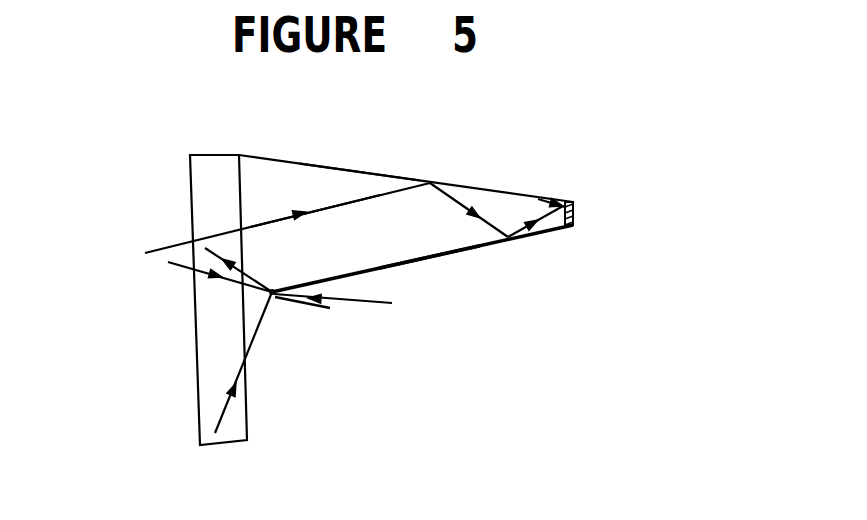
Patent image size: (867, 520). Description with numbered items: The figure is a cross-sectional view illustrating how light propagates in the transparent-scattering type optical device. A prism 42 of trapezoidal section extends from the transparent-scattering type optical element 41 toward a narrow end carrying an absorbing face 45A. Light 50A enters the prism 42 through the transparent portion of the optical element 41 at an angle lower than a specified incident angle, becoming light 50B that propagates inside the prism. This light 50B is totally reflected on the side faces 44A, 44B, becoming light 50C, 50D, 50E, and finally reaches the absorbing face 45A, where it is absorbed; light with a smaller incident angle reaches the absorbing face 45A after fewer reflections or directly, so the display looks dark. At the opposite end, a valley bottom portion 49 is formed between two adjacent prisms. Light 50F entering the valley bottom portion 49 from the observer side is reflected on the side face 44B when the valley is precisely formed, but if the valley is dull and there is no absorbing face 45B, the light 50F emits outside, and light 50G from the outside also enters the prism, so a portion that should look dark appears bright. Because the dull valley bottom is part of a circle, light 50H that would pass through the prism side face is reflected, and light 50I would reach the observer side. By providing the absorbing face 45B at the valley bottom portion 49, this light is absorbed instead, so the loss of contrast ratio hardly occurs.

The transparent-scattering type optical element 41 is at (206, 150).
The prism 42 is at (452, 174).
The side face 44A is at (378, 174).
The side face 44B is at (432, 258).
The absorbing face 45A is at (575, 212).
The absorbing face 45B is at (280, 305).
The valley bottom portion 49 is at (272, 293).
The light 50A is at (168, 246).
The light 50B is at (325, 205).
The light 50C is at (495, 235).
The light 50D is at (512, 224).
The light 50E is at (555, 229).
The light 50F is at (182, 267).
The light 50G is at (385, 306).
The light 50H is at (223, 417).
The light 50I is at (232, 268).